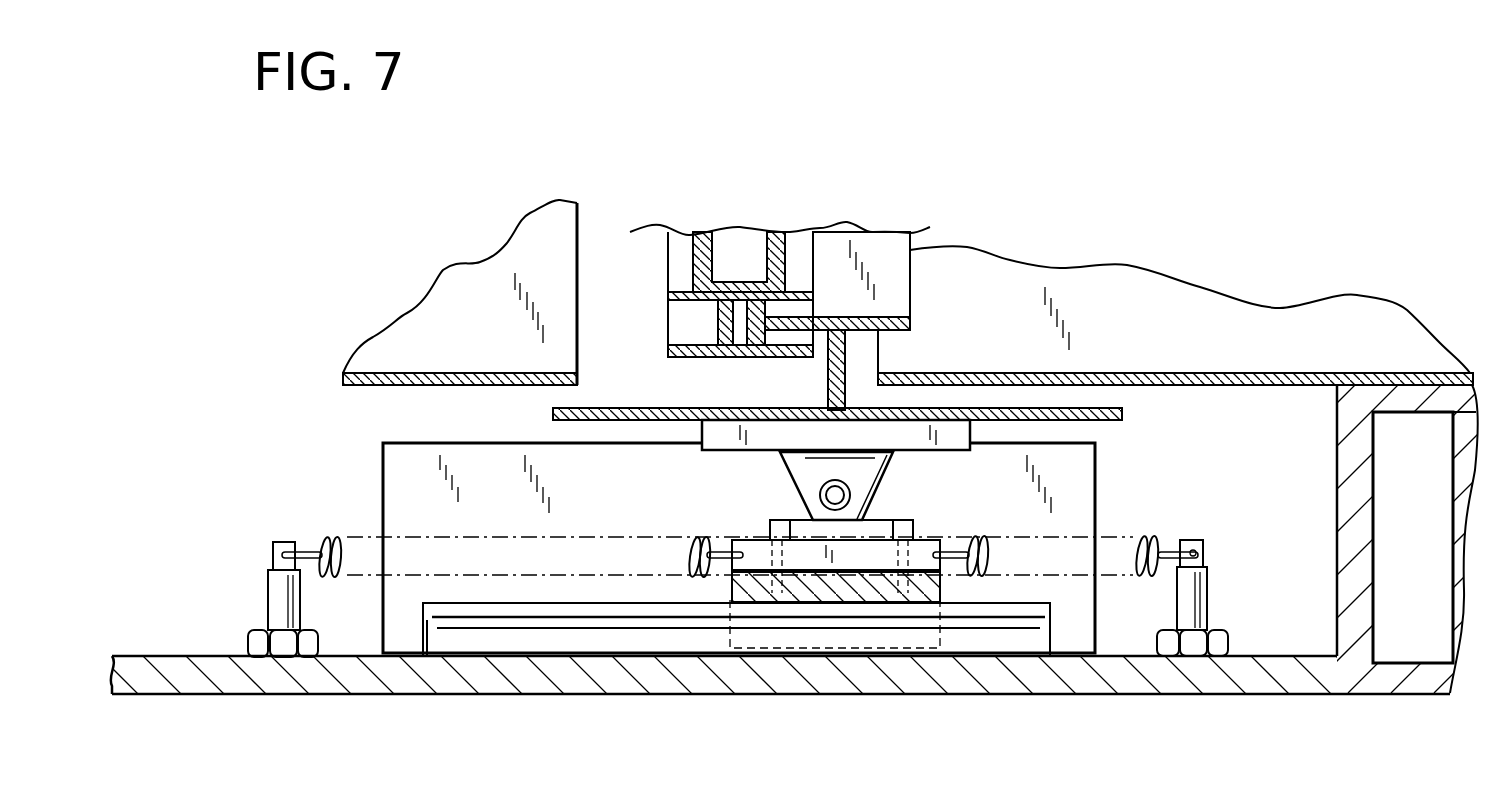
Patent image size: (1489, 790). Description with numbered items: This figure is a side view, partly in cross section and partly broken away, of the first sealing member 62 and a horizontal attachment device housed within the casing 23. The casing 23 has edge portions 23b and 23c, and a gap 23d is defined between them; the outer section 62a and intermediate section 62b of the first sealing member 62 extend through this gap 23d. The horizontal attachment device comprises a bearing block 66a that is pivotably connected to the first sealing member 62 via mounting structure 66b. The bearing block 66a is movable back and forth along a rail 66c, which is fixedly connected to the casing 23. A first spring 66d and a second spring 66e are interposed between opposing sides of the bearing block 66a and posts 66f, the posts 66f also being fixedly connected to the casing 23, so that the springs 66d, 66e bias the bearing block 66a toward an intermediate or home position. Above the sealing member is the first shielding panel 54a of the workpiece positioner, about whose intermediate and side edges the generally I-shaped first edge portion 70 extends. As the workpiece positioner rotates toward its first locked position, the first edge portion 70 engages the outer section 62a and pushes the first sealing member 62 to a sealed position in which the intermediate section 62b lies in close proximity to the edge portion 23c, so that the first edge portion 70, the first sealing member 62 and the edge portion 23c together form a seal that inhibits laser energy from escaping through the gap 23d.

The casing 23 is at (1208, 678).
The edge portion 23b is at (577, 310).
The edge portion 23c is at (870, 358).
The gap 23d is at (621, 382).
The first shielding panel 54a is at (707, 235).
The first sealing member 62 is at (853, 297).
The outer section 62a is at (910, 320).
The intermediate section 62b is at (828, 377).
The first edge portion 70 is at (800, 293).
The bearing block 66a is at (858, 583).
The mounting structure 66b is at (812, 548).
The rail 66c is at (1020, 605).
The first spring 66d is at (340, 537).
The second spring 66e is at (1140, 537).
The posts 66f is at (268, 592).